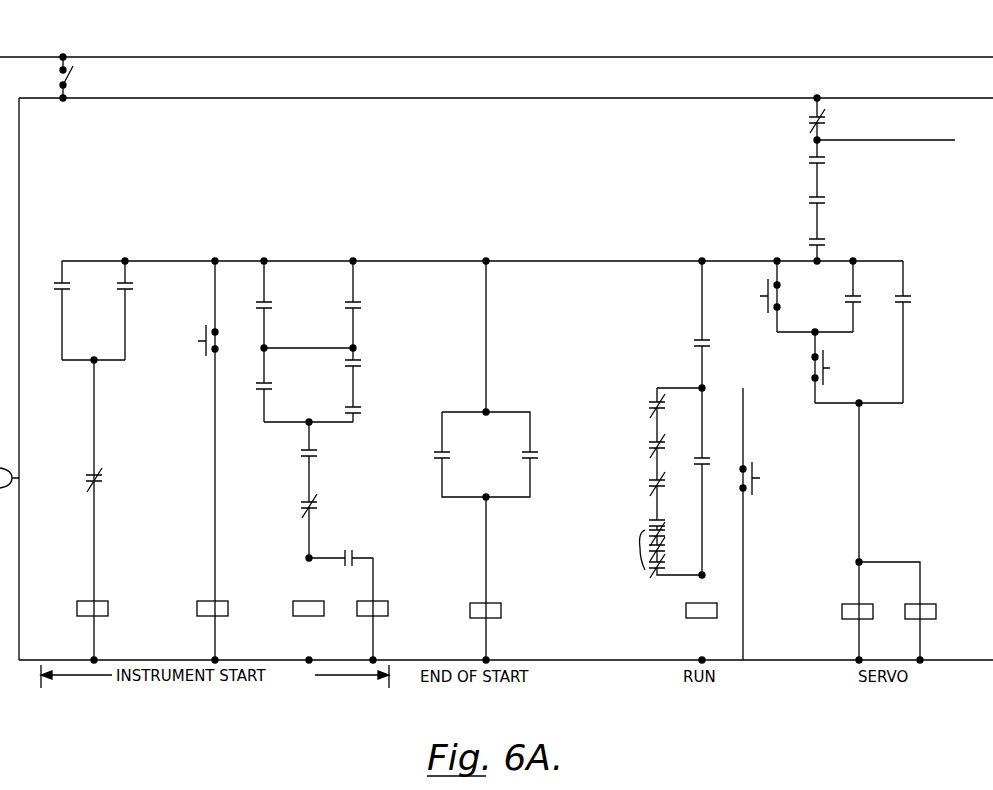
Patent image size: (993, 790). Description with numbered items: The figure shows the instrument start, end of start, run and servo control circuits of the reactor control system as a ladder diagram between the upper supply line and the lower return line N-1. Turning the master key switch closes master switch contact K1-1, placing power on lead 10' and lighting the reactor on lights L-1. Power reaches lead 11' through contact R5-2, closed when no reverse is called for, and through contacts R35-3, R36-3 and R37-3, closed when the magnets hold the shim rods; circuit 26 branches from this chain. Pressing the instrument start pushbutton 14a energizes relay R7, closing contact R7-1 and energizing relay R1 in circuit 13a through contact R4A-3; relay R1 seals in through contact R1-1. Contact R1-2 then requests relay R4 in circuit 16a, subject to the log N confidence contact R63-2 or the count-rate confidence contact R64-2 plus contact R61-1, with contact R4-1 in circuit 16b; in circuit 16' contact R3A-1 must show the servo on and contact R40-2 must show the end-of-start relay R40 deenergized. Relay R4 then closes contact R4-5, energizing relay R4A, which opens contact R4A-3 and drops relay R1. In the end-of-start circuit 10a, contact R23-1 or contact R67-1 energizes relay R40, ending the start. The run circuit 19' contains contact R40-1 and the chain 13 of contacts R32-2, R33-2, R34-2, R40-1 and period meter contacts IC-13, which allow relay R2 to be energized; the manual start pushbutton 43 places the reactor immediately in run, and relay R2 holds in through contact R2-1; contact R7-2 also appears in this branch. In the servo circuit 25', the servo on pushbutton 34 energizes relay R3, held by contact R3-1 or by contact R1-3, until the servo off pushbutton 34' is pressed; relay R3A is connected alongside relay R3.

The reactor on lights L-1 is at (401, 57).
The master switch contact K1-1 is at (156, 77).
The lead 10' is at (506, 369).
The neutral line N-1 is at (590, 660).
The lead 11' is at (482, 250).
The run interlock contact chain 13 is at (614, 481).
The circuit 13a is at (118, 510).
The instrument start pushbutton 14a is at (206, 356).
The circuit 16a is at (274, 340).
The circuit 16b is at (379, 340).
The circuit 16' is at (320, 490).
The end-of-start circuit 10a is at (486, 459).
The run circuit 19' is at (708, 323).
The manual start pushbutton 43 is at (755, 461).
The servo on pushbutton 34 is at (783, 295).
The servo off pushbutton 34' is at (827, 367).
The circuit 26 is at (882, 179).
The circuit 25' is at (877, 531).
The contact R7-1 is at (68, 293).
The contact R1-1 is at (131, 293).
The contact R4A-3 is at (97, 472).
The relay R1 is at (95, 601).
The relay R7 is at (216, 601).
The contact R1-2 is at (270, 296).
The log N confidence contact R63-2 is at (270, 377).
The contact R4-1 is at (359, 296).
The count-rate confidence contact R64-2 is at (359, 354).
The contact R61-1 is at (359, 401).
The contact R3A-1 is at (315, 444).
The contact R40-2 is at (298, 497).
The contact R4-5 is at (346, 548).
The relay R4 is at (312, 601).
The relay R4A is at (376, 601).
The contact R23-1 is at (448, 446).
The contact R67-1 is at (526, 462).
The end-of-start relay R40 is at (488, 603).
The relay contact R7-2 is at (708, 334).
The contact R32-2 is at (648, 402).
The contact R33-2 is at (648, 442).
The contact R34-2 is at (648, 482).
The contact R40-1 is at (648, 520).
The period meter contacts IC-13 is at (628, 550).
The contact R2-1 is at (708, 468).
The relay R2 is at (704, 603).
The contact R5-2 is at (826, 120).
The contact R35-3 is at (826, 160).
The contact R36-3 is at (826, 200).
The contact R37-3 is at (826, 242).
The contact R3-1 is at (859, 290).
The contact R1-3 is at (909, 290).
The relay R3 is at (860, 604).
The servo relay R3A is at (923, 604).